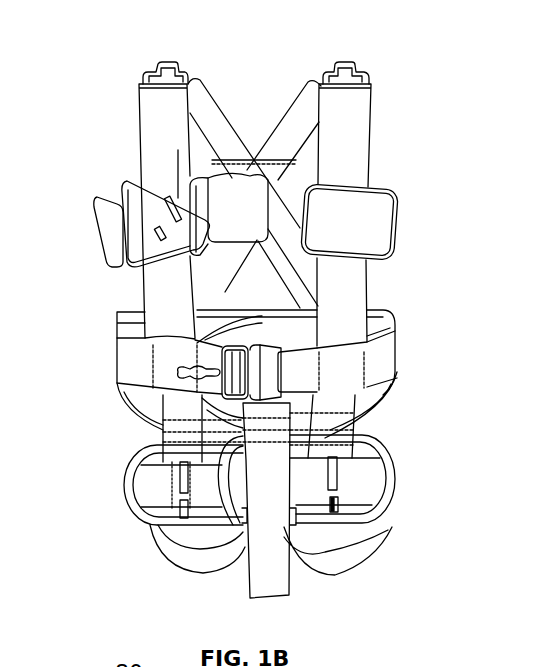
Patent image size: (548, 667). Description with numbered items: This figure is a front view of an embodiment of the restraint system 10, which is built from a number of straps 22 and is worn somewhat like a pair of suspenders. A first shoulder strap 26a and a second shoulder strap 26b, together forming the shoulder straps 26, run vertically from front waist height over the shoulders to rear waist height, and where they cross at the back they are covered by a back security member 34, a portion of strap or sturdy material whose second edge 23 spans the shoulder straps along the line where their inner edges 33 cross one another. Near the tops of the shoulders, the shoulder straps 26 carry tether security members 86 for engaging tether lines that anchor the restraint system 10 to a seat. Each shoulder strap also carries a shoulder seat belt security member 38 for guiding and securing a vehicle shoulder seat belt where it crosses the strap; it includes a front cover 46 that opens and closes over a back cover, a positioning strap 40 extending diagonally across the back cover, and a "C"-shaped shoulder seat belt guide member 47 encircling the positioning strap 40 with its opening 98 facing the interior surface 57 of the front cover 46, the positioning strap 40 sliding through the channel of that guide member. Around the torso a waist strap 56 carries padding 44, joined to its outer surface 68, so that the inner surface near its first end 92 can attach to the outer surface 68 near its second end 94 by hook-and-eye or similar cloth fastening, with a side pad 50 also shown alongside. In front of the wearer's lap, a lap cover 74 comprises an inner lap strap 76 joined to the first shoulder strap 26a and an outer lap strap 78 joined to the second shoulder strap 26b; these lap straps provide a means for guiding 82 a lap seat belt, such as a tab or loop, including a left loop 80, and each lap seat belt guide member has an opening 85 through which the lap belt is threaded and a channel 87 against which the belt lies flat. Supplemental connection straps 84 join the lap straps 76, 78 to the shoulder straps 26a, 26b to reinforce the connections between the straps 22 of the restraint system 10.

The restraint system 10 is at (357, 48).
The straps 22 is at (311, 567).
The second edge 23 is at (226, 159).
The shoulder straps 26 is at (372, 128).
The first shoulder strap 26a is at (172, 437).
The second shoulder strap 26b is at (340, 432).
The inner edges 33 is at (226, 103).
The back security member 34 is at (277, 170).
The shoulder seat belt security member 38 is at (402, 190).
The positioning strap 40 is at (125, 188).
The padding 44 is at (362, 405).
The front cover 46 is at (383, 242).
The shoulder seat belt guide member 47 is at (177, 203).
The side pad 50 is at (100, 214).
The waist strap 56 is at (125, 361).
The interior surface 57 is at (243, 218).
The outer surface 68 is at (388, 345).
The lap cover 74 is at (138, 525).
The inner lap strap 76 is at (145, 472).
The outer lap strap 78 is at (373, 497).
The left loop 80 is at (145, 449).
The means for guiding 82 is at (180, 478).
The supplemental connection straps 84 is at (262, 456).
The opening 85 is at (358, 488).
The tether security members 86 is at (165, 63).
The channel 87 is at (332, 498).
The first end 92 is at (280, 313).
The second end 94 is at (230, 307).
The opening 98 is at (80, 364).